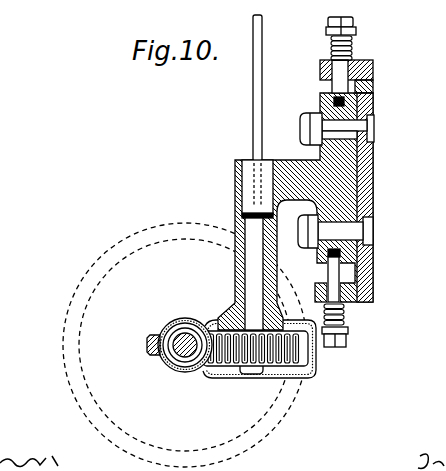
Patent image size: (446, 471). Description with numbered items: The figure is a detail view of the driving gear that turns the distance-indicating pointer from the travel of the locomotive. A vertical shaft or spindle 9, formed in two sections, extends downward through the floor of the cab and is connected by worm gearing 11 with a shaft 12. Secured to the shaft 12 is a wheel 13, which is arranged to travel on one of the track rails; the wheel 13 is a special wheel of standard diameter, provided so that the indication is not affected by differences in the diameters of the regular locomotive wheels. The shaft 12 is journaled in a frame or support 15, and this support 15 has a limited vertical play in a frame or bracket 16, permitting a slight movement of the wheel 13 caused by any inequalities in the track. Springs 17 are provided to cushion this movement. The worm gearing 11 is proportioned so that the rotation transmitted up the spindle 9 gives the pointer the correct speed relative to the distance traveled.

The vertical shaft or spindle 9 is at (253, 120).
The worm gearing 11 is at (232, 357).
The shaft 12 is at (185, 358).
The wheel 13 is at (70, 337).
The frame or support 15 is at (374, 178).
The frame or bracket 16 is at (375, 90).
The springs 17 is at (353, 52).